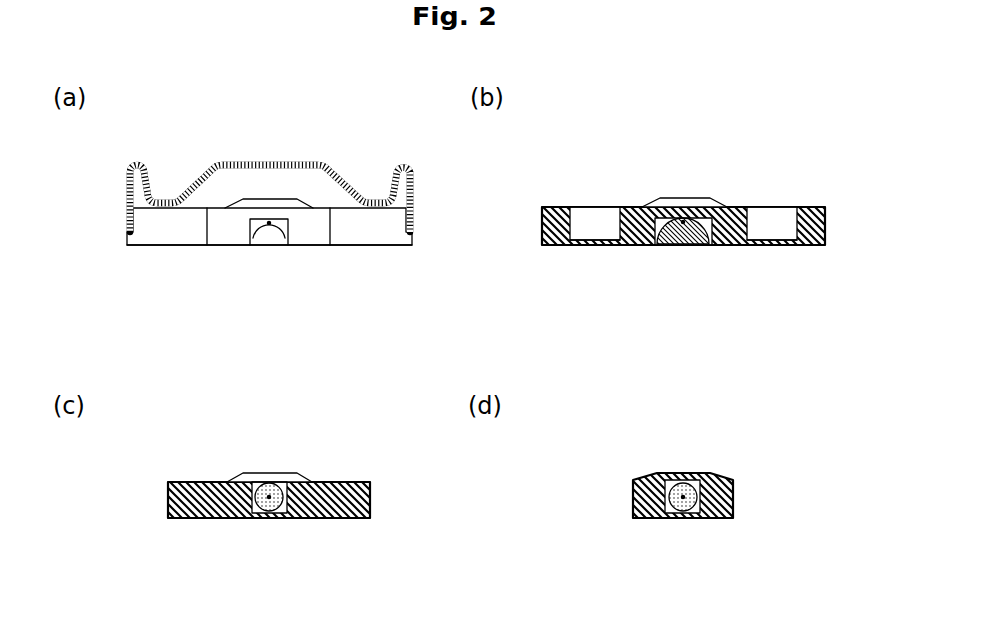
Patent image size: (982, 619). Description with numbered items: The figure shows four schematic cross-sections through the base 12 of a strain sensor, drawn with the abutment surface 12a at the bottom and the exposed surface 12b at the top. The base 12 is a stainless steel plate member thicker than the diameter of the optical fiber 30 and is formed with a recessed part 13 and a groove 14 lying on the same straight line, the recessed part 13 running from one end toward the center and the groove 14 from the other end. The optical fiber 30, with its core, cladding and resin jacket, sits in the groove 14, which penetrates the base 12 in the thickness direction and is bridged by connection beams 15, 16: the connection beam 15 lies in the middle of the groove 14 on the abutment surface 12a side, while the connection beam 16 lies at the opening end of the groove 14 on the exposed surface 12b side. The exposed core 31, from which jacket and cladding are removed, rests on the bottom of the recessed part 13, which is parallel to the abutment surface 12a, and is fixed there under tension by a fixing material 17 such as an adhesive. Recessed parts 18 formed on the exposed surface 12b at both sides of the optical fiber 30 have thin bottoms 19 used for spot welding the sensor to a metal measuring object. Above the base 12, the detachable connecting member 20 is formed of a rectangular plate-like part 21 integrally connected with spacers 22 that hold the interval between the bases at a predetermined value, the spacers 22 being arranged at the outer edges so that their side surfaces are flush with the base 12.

The base 12 is at (138, 247).
The abutment surface 12a is at (407, 247).
The exposed surface 12b is at (818, 206).
The recessed part 13 is at (256, 242).
The groove 14 is at (257, 486).
The connection beam 15 is at (278, 518).
The connection beam 16 is at (295, 198).
The fixing material 17 is at (278, 242).
The recessed part 18 is at (571, 218).
The bottom 19 is at (600, 237).
The connecting member 20 is at (227, 154).
The plate-like part 21 is at (300, 161).
The spacer 22 is at (127, 195).
The optical fiber 30 is at (260, 512).
The core 31 is at (273, 224).